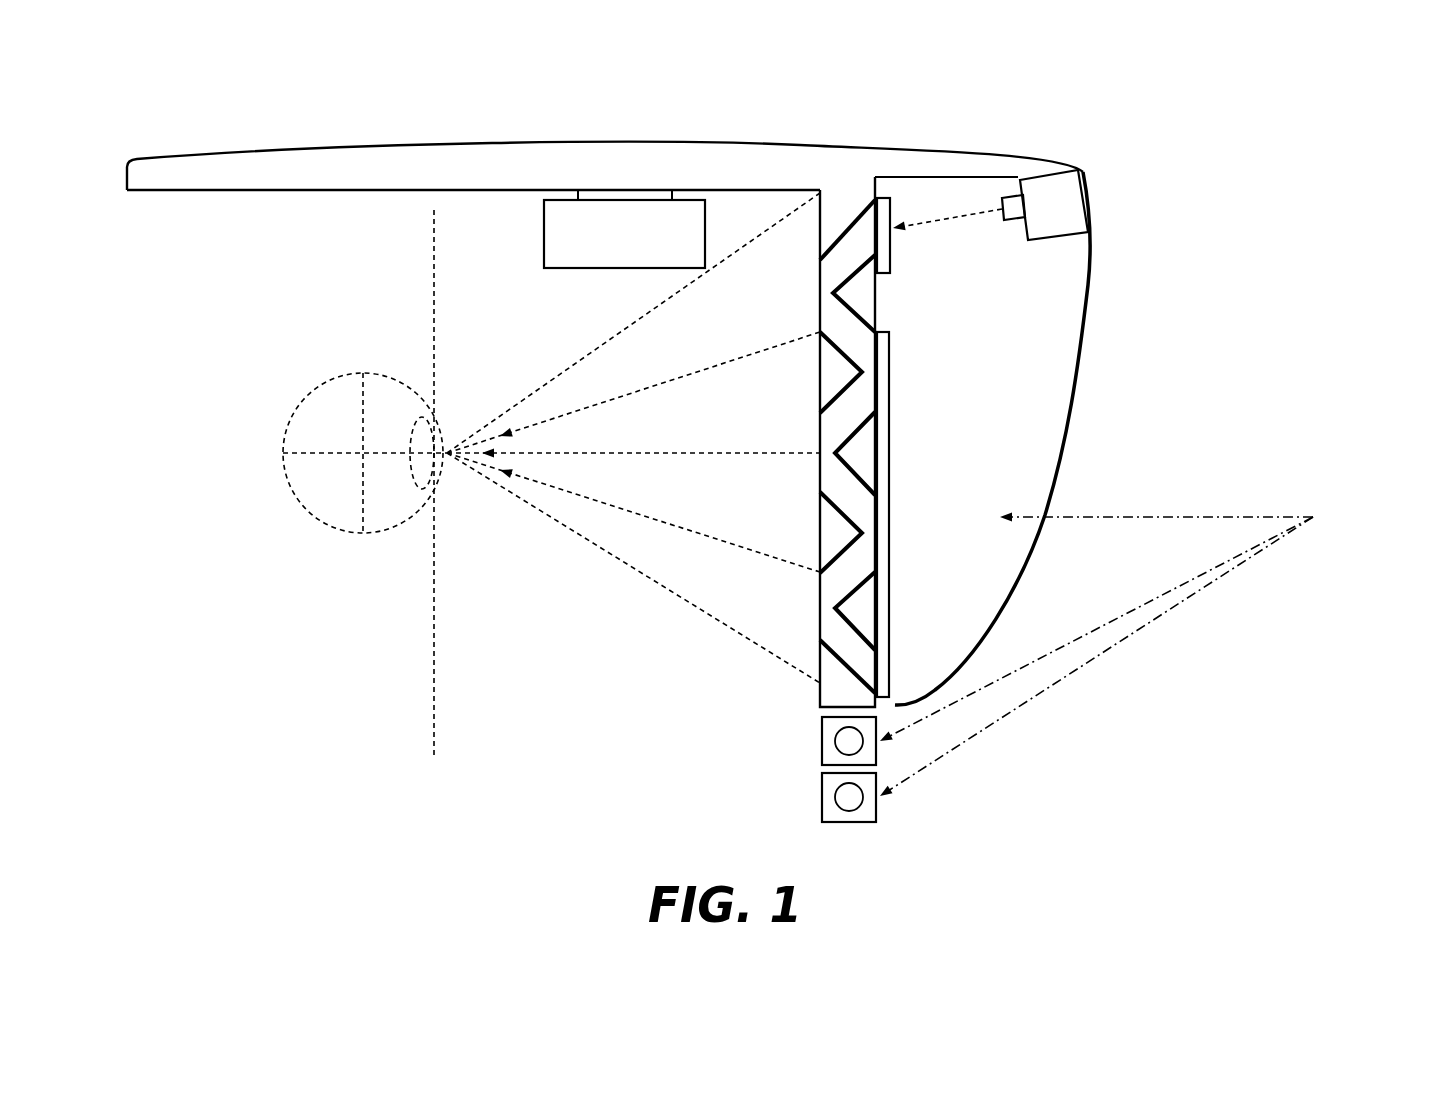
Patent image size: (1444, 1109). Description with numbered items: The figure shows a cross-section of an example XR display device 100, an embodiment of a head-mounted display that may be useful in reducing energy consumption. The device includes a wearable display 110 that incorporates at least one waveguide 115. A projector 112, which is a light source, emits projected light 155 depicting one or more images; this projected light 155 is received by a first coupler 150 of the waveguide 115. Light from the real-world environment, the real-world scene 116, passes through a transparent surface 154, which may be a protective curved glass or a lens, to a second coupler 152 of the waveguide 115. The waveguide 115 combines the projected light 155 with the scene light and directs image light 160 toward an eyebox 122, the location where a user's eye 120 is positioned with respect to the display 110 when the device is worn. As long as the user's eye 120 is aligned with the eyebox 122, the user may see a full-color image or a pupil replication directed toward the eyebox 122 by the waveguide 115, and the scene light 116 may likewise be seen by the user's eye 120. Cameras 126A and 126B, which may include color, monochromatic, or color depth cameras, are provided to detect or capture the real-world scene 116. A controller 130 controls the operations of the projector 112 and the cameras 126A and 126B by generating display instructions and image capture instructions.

The XR display device 100 is at (555, 88).
The wearable display 110 is at (889, 414).
The projector 112 is at (1052, 200).
The waveguide 115 is at (855, 400).
The real-world scene 116 is at (1128, 517).
The user's eye 120 is at (287, 472).
The eyebox 122 is at (434, 680).
The camera 126A is at (822, 746).
The camera 126B is at (852, 823).
The controller 130 is at (644, 256).
The first coupler 150 is at (950, 265).
The second coupler 152 is at (889, 517).
The transparent surface 154 is at (1091, 285).
The projected light 155 is at (898, 158).
The image light 160 is at (768, 452).